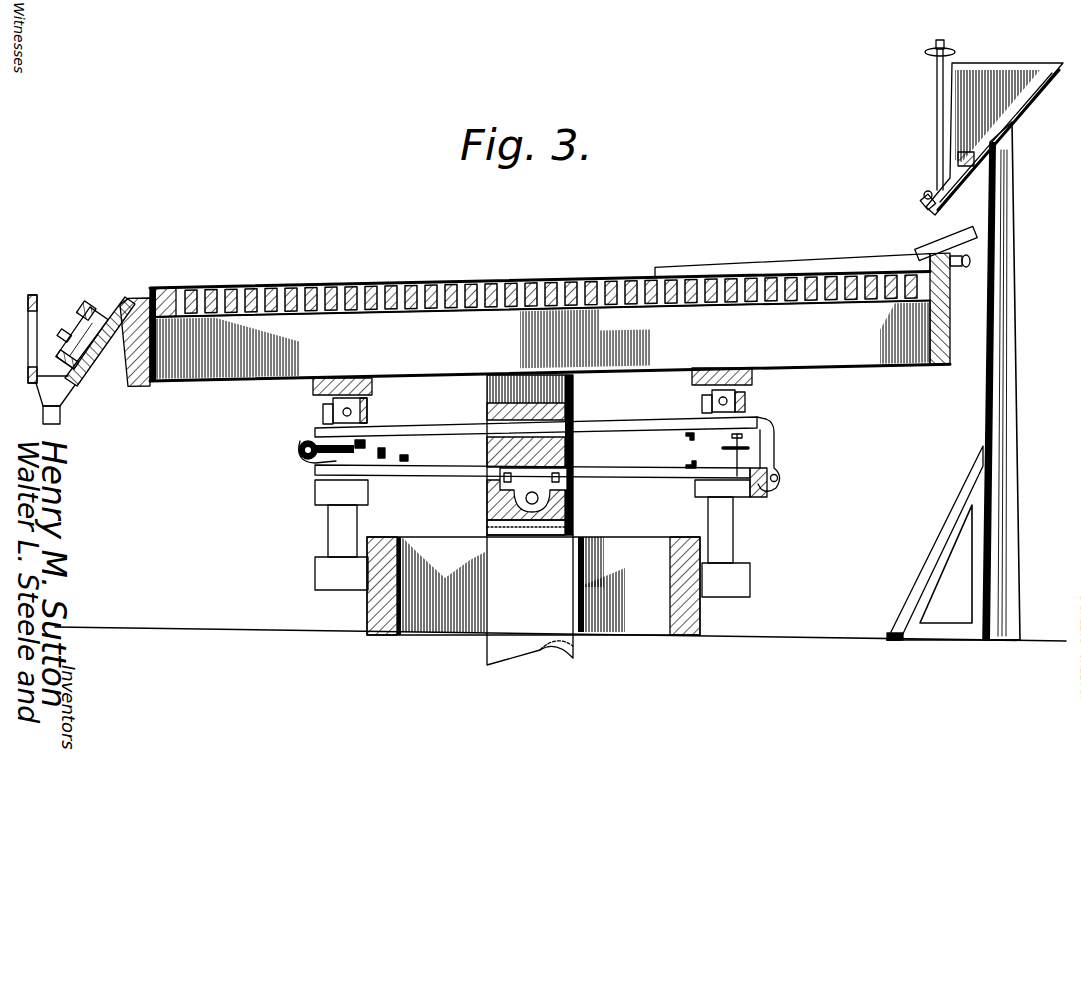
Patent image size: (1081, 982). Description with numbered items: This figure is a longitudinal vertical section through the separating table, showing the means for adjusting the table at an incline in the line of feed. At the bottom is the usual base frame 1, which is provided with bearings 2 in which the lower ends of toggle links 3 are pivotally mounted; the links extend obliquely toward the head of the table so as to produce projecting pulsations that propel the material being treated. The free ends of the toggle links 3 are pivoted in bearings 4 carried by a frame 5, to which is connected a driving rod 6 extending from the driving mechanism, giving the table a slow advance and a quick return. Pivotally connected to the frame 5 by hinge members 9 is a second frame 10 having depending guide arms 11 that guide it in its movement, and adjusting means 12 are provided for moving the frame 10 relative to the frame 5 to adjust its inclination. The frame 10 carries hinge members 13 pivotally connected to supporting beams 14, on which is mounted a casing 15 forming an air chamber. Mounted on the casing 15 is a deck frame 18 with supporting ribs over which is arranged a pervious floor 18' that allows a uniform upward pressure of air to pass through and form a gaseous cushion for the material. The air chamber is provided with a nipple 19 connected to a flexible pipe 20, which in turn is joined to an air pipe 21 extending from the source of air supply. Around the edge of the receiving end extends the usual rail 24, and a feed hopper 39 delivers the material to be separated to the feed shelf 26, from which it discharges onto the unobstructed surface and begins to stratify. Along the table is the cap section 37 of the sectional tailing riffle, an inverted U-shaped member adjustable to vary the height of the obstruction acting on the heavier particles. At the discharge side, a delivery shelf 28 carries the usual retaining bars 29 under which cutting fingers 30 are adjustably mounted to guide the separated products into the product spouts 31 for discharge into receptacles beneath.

The base frame 1 is at (618, 602).
The bearings 2 is at (322, 580).
The toggle links 3 is at (330, 532).
The bearings 4 is at (318, 492).
The frame 5 is at (652, 480).
The driving rod 6 is at (530, 504).
The hinge members 9 is at (300, 447).
The frame 10 is at (606, 428).
The depending guide arms 11 is at (768, 460).
The adjusting means 12 is at (752, 449).
The hinge members 13 is at (368, 415).
The supporting beams 14 is at (376, 386).
The casing 15 is at (132, 388).
The deck frame 18 is at (536, 312).
The pervious floor 18' is at (551, 275).
The nipple 19 is at (520, 392).
The flexible pipe 20 is at (492, 486).
The air pipe 21 is at (545, 648).
The rail 24 is at (785, 282).
The feed shelf 26 is at (978, 236).
The delivery shelf 28 is at (98, 378).
The retaining bars 29 is at (68, 328).
The cutting fingers 30 is at (100, 318).
The product spouts 31 is at (40, 388).
The cap section 37 is at (530, 300).
The feed hopper 39 is at (991, 127).